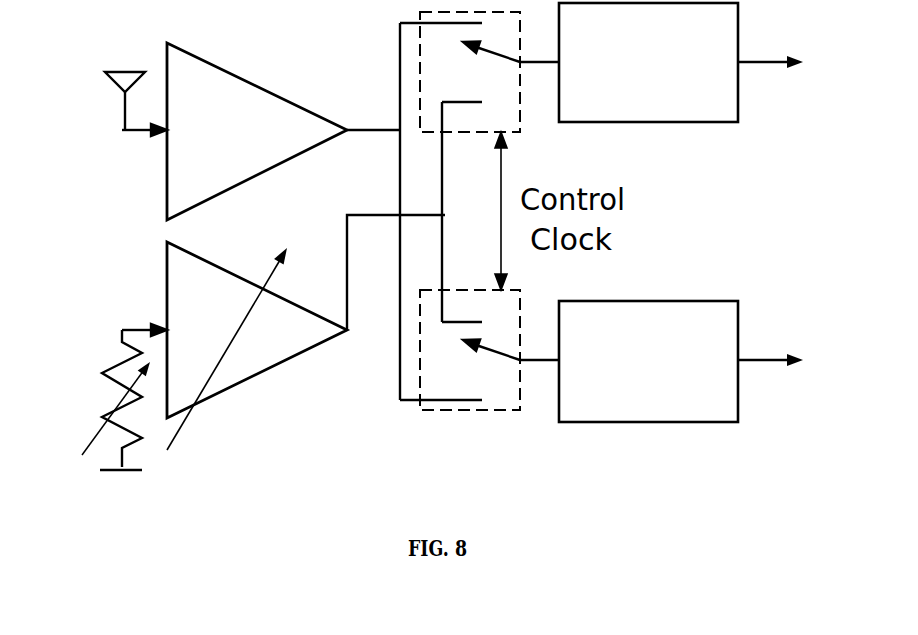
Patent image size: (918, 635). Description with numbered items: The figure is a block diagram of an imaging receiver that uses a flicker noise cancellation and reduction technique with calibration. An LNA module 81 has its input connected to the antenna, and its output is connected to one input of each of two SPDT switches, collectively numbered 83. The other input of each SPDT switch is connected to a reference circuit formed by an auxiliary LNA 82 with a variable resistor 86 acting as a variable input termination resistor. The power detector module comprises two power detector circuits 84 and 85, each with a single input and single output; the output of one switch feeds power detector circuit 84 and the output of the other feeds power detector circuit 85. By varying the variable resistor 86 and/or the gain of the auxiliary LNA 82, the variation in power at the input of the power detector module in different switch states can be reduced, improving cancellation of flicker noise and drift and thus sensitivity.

The LNA module 81 is at (162, 158).
The auxiliary LNA 82 is at (298, 358).
The SPDT switches 83 is at (460, 62).
The power detector circuit 84 is at (625, 122).
The power detector circuit 85 is at (635, 422).
The variable resistor 86 is at (116, 397).